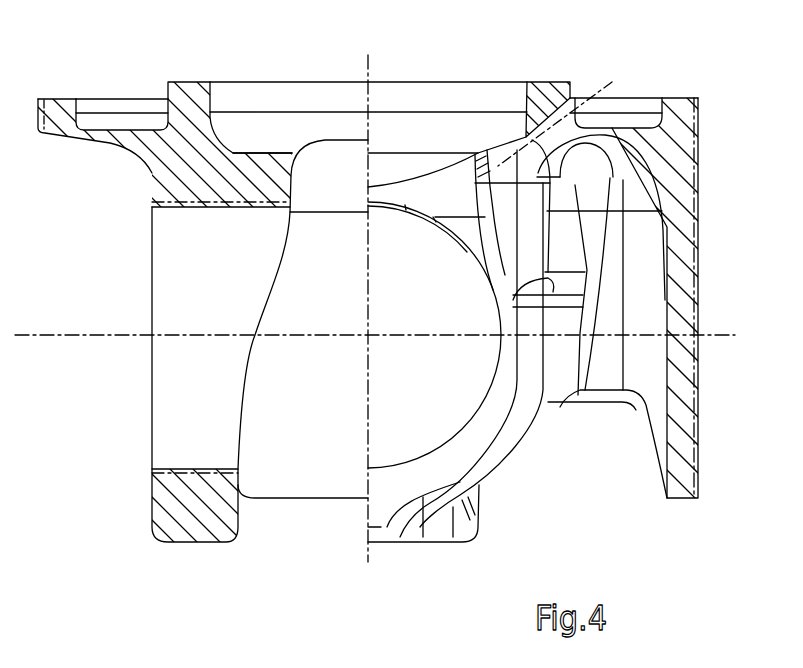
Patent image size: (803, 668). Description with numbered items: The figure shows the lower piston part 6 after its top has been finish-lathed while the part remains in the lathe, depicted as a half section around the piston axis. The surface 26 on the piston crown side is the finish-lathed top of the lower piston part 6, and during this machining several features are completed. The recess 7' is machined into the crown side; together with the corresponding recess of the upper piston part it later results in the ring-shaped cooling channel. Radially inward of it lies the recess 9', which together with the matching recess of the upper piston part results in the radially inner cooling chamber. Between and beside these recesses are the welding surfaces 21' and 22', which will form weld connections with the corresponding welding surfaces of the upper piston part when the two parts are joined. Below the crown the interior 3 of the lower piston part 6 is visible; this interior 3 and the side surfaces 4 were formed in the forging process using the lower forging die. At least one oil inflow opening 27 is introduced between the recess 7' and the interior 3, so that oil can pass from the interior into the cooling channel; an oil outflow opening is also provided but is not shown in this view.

The interior 3 is at (313, 415).
The side surfaces 4 is at (700, 307).
The lower piston part 6 is at (665, 140).
The recess 7' is at (122, 79).
The recess 9' is at (329, 120).
The welding surface 21' is at (54, 79).
The welding surface 22' is at (401, 334).
The surface on the piston crown side 26 is at (483, 82).
The oil inflow opening 27 is at (582, 162).